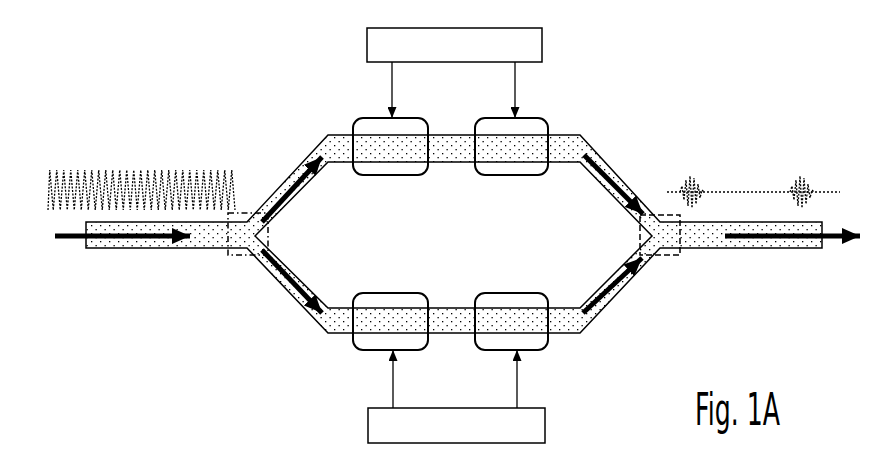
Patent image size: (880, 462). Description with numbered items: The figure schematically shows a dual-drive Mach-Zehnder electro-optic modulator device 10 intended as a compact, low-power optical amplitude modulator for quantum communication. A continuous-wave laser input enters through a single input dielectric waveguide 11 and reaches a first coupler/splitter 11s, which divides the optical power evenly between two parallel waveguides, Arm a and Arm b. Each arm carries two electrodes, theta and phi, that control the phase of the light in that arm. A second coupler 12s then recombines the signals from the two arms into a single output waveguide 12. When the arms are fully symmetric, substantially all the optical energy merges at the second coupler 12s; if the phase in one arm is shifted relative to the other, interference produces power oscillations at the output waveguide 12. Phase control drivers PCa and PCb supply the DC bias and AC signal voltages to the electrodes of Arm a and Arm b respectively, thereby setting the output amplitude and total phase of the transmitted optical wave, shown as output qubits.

The dual-drive MZ-EOM device 10 is at (472, 243).
The input dielectric waveguide 11 is at (196, 250).
The first coupler/splitter 11s is at (268, 238).
The output waveguide 12 is at (765, 250).
The second coupler 12s is at (637, 236).
The phase control driver PCa is at (630, 28).
The phase control driver PCb is at (368, 425).